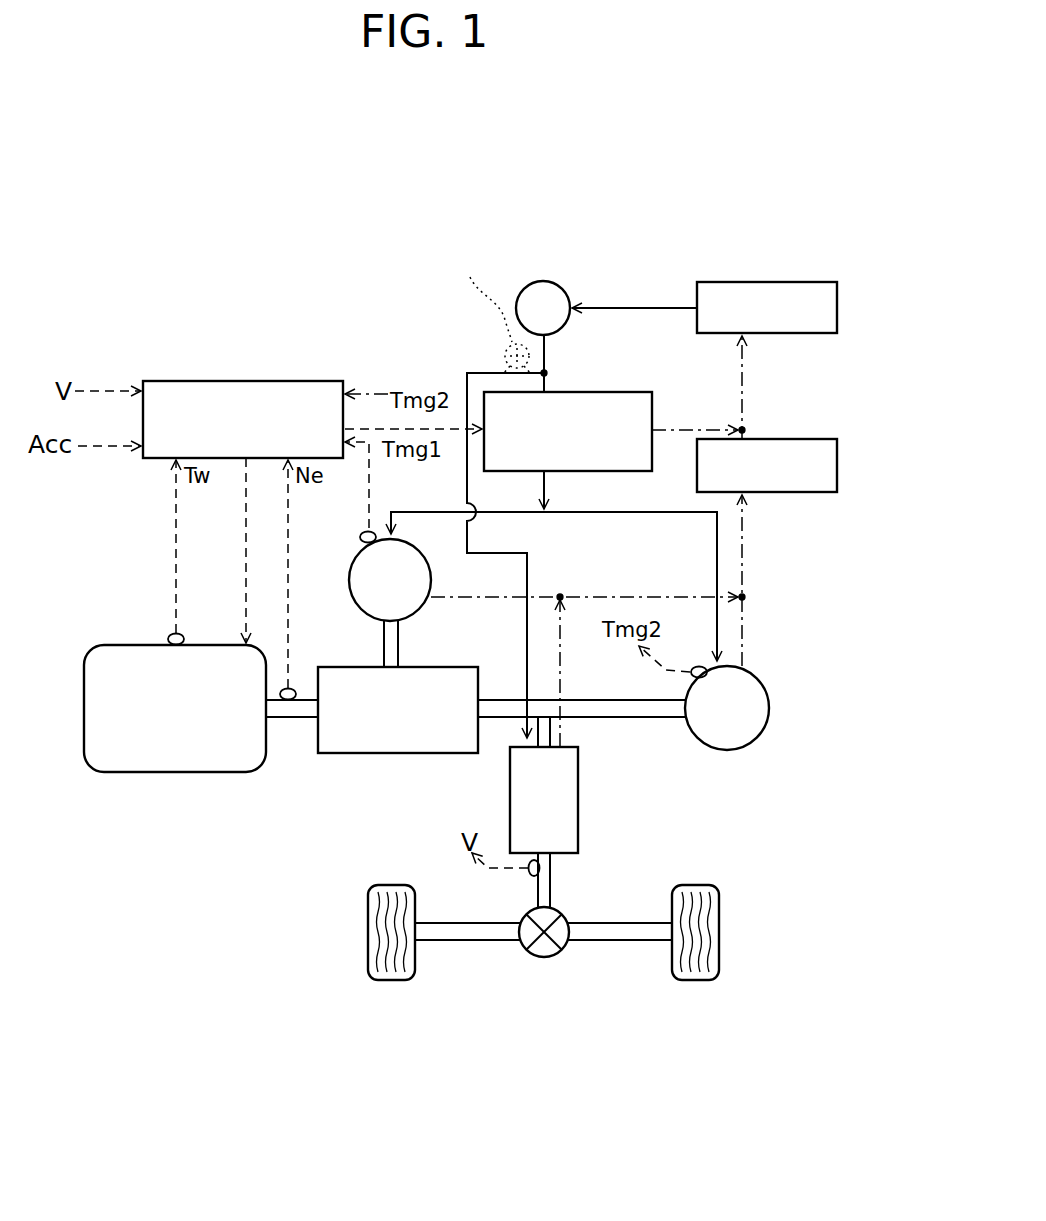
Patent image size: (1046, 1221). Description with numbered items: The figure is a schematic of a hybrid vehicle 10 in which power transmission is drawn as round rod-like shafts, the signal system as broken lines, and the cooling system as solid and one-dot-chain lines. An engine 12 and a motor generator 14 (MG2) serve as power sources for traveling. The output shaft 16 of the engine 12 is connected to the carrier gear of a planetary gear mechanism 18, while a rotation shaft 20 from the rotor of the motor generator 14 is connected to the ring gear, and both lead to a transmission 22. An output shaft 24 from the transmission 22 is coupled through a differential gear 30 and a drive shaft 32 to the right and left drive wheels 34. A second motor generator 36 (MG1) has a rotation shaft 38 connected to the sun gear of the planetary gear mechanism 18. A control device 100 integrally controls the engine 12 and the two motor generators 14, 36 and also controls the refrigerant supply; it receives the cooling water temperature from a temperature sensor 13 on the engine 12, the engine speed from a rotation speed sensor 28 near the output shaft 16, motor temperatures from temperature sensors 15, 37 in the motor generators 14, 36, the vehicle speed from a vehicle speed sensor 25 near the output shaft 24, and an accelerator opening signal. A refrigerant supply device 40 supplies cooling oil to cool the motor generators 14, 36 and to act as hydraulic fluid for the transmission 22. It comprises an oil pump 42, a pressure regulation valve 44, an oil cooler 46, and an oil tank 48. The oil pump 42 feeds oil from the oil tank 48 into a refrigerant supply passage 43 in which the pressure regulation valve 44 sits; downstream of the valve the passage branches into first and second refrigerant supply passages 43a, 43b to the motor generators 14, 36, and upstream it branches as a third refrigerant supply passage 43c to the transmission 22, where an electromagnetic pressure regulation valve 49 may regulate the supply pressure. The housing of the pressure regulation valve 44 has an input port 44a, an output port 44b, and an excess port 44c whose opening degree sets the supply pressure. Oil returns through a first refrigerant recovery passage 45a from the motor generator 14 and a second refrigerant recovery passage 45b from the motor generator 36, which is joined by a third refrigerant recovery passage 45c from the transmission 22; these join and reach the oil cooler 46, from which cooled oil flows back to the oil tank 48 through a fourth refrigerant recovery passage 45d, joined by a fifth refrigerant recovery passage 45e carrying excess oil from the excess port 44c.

The hybrid vehicle 10 is at (433, 211).
The engine 12 is at (173, 772).
The temperature sensor 13 is at (170, 633).
The motor generator 14 is at (748, 745).
The temperature sensor 15 is at (699, 665).
The output shaft 16 is at (298, 718).
The planetary gear mechanism 18 is at (370, 753).
The rotation shaft 20 is at (662, 718).
The transmission 22 is at (578, 835).
The output shaft 24 is at (551, 893).
The vehicle speed sensor 25 is at (527, 876).
The rotation speed sensor 28 is at (292, 688).
The differential gear 30 is at (545, 957).
The drive shaft 32 is at (465, 941).
The drive wheels 34 is at (390, 981).
The motor generator 36 is at (349, 577).
The temperature sensor 37 is at (376, 530).
The rotation shaft 38 is at (398, 643).
The refrigerant supply device 40 is at (635, 276).
The oil pump 42 is at (543, 281).
The refrigerant supply passage 43 is at (546, 345).
The first refrigerant supply passage 43a is at (670, 511).
The second refrigerant supply passage 43b is at (510, 511).
The third refrigerant supply passage 43c is at (487, 372).
The pressure regulation valve 44 is at (654, 390).
The input port 44a is at (545, 388).
The output port 44b is at (546, 476).
The excess port 44c is at (655, 429).
The first refrigerant recovery passage 45a is at (746, 633).
The second refrigerant recovery passage 45b is at (634, 596).
The third refrigerant recovery passage 45c is at (561, 647).
The fourth refrigerant recovery passage 45d is at (746, 366).
The fifth refrigerant recovery passage 45e is at (735, 426).
The oil cooler 46 is at (806, 439).
The oil tank 48 is at (793, 282).
The electromagnetic pressure regulation valve 49 is at (492, 312).
The control device 100 is at (190, 380).